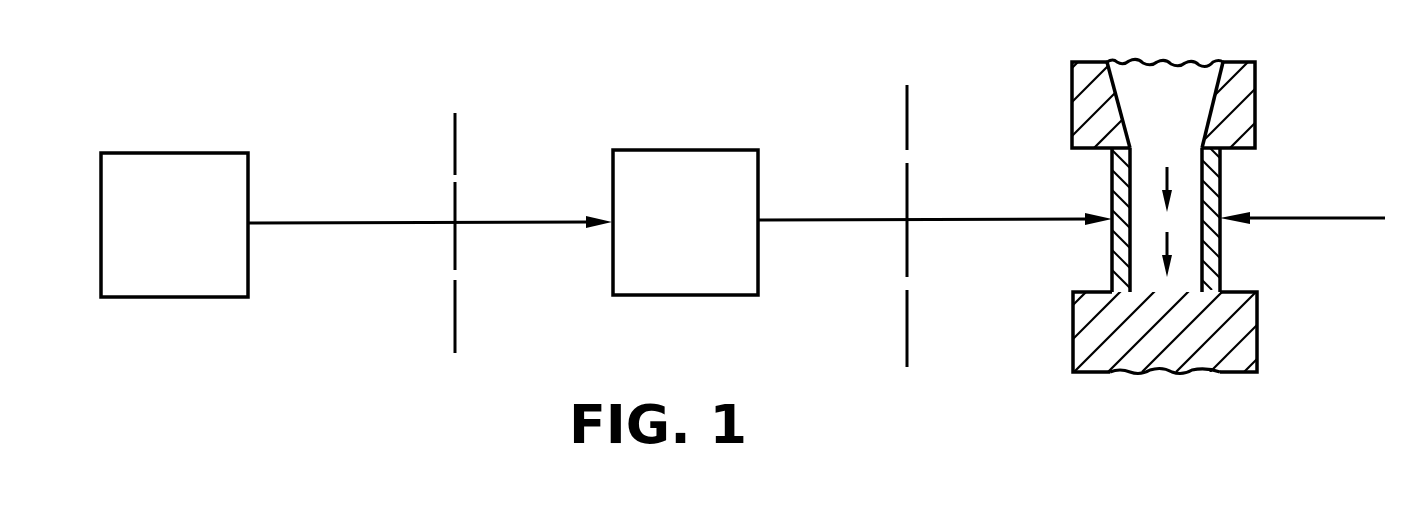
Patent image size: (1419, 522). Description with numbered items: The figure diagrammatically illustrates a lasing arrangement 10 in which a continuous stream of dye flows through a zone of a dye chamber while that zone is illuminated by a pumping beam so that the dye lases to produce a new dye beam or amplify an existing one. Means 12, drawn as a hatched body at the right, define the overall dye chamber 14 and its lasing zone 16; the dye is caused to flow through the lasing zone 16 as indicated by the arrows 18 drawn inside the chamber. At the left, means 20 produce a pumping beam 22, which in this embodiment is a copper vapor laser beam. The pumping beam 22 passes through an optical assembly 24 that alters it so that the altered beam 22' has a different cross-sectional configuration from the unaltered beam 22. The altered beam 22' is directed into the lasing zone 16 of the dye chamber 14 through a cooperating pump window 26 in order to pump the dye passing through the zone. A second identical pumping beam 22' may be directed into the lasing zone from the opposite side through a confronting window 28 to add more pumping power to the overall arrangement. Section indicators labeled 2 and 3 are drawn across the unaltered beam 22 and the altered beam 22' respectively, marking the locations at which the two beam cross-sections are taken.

The lasing arrangement 10 is at (306, 369).
The means for defining the dye chamber 12 is at (1257, 95).
The dye chamber 14 is at (1177, 93).
The lasing zone 16 is at (1185, 246).
The arrows 18 is at (1163, 197).
The means for producing a pumping beam 20 is at (191, 203).
The pumping beam 22 is at (430, 197).
The altered beam 22' is at (1076, 191).
The optical assembly 24 is at (706, 195).
The pump window 26 is at (1113, 183).
The confronting window 28 is at (1222, 197).
The section line 2- 2 is at (473, 123).
The section line 3- 3 is at (928, 95).